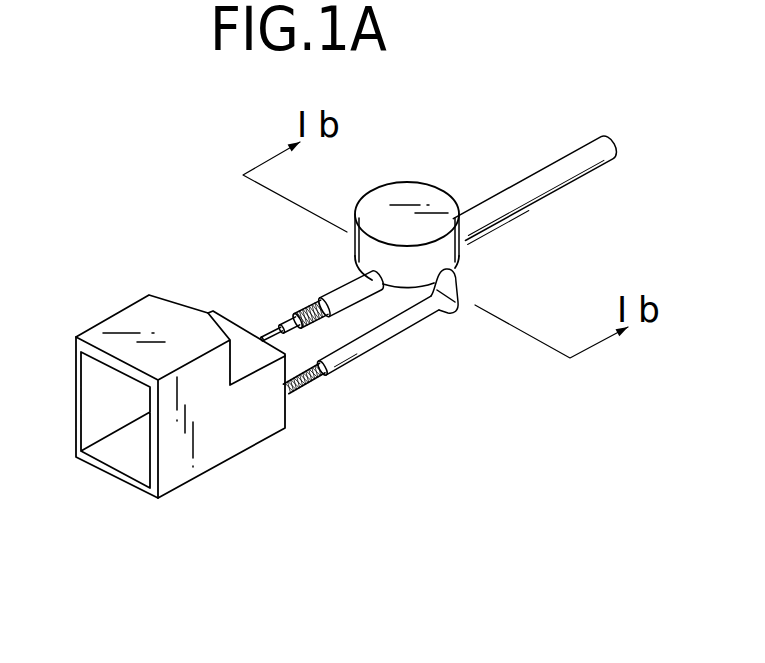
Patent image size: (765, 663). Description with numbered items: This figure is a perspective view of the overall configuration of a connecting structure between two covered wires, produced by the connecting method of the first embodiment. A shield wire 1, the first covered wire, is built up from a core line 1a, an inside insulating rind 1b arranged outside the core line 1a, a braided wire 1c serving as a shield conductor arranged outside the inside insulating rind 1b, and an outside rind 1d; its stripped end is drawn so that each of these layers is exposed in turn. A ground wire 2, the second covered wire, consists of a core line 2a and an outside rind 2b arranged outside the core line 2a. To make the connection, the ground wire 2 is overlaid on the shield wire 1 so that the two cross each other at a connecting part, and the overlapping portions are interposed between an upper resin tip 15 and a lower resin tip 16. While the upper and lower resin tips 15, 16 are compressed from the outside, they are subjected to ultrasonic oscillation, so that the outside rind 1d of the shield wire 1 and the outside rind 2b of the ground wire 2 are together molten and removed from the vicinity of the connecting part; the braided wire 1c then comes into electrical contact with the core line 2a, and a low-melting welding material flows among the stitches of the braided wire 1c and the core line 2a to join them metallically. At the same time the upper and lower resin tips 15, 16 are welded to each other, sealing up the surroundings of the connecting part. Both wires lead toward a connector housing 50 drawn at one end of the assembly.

The shield wire 1 is at (590, 150).
The core line 1a is at (266, 336).
The inside insulating rind 1b is at (283, 333).
The braided wire 1c is at (300, 317).
The outside rind 1d is at (342, 283).
The ground wire 2 is at (367, 402).
The core line 2a is at (304, 386).
The outside rind 2b is at (395, 335).
The upper resin tip 15 is at (440, 196).
The lower resin tip 16 is at (461, 332).
The connector housing 50 is at (173, 466).